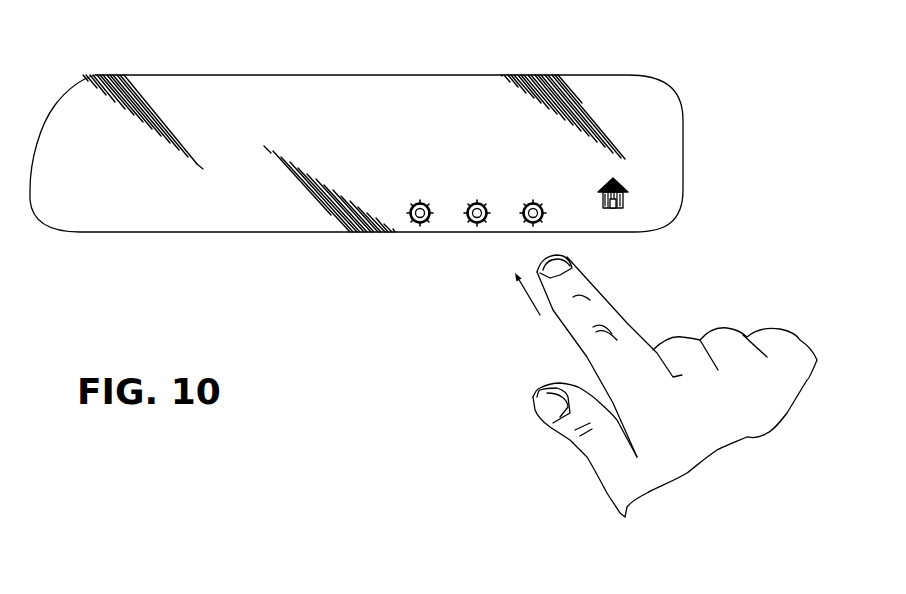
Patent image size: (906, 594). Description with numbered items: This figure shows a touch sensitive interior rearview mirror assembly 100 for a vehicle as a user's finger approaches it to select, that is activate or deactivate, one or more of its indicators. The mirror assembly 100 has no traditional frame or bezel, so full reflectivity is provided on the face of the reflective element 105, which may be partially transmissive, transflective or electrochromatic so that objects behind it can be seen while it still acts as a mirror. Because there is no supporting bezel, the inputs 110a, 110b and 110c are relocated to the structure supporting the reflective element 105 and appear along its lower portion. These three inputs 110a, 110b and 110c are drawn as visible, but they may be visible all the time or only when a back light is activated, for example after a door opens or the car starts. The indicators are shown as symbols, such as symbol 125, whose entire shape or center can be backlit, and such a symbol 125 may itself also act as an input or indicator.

The interior rearview mirror assembly 100 is at (660, 76).
The reflective element 105 is at (375, 154).
The input 110a is at (418, 203).
The input 110b is at (477, 204).
The input 110c is at (537, 205).
The symbol 125 is at (624, 182).